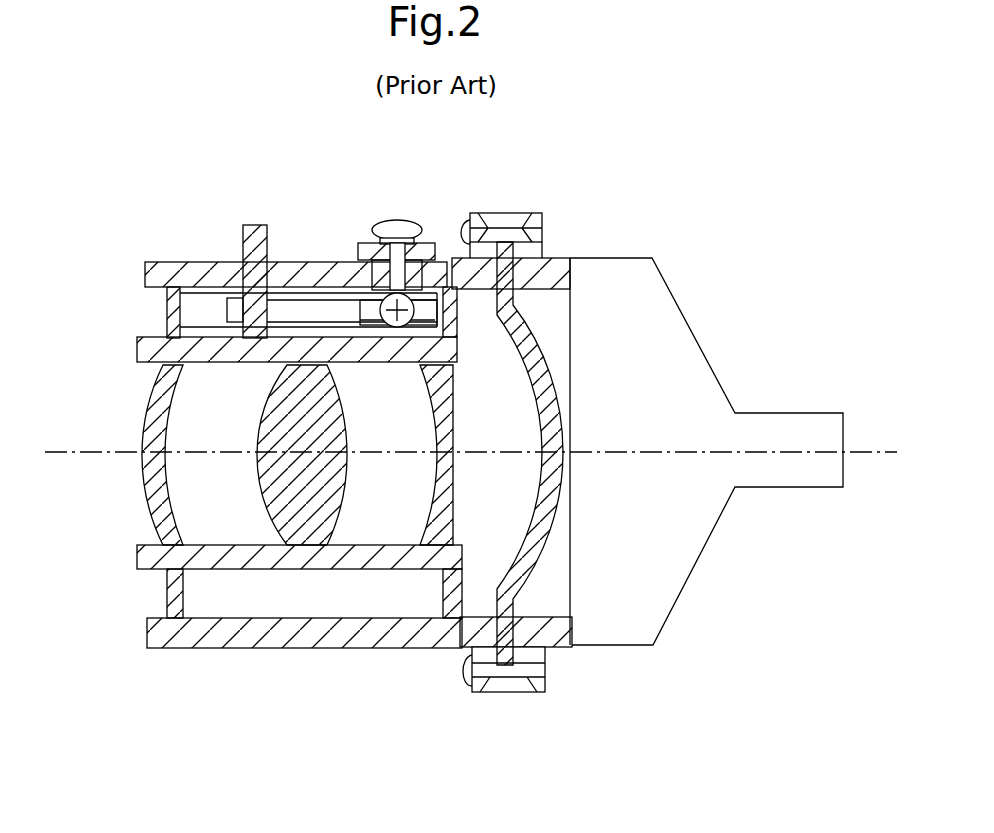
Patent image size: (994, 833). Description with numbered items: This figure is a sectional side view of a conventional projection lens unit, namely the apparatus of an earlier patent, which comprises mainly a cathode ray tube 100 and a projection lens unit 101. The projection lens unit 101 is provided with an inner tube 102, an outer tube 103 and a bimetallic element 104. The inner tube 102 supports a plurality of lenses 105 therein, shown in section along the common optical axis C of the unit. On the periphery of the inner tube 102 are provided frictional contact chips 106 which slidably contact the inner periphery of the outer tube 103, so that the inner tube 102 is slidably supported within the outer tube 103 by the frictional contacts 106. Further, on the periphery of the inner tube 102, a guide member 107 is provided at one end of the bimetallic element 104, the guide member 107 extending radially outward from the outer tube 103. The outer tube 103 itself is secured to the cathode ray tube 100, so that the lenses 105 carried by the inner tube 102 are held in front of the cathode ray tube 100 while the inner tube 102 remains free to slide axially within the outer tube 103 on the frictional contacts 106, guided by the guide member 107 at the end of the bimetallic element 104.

The cathode ray tube 100 is at (676, 536).
The projection lens unit 101 is at (275, 652).
The inner tube 102 is at (137, 352).
The outer tube 103 is at (145, 281).
The bimetallic element 104 is at (300, 310).
The lenses 105 is at (428, 492).
The frictional contacts 106 is at (175, 598).
The guide member 107 is at (258, 226).
The optical axis C is at (872, 454).